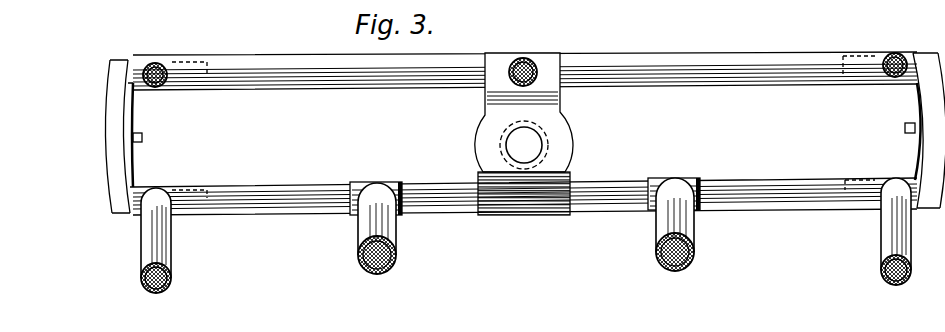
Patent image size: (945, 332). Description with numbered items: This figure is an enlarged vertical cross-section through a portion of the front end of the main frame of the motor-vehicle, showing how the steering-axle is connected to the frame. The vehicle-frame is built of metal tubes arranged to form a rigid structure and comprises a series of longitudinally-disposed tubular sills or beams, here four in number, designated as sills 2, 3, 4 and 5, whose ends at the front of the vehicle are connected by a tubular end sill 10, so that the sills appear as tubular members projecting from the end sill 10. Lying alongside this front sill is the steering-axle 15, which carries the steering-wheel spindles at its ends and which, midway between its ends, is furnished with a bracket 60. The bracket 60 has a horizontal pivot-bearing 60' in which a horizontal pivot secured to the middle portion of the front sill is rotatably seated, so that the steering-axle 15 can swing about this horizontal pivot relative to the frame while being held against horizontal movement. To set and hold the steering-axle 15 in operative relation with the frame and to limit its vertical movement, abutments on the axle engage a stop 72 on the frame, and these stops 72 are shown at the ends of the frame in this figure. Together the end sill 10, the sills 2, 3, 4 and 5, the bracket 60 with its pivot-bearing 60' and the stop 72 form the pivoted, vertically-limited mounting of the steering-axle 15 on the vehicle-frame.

The outer sill 2 is at (912, 260).
The sill 3 is at (695, 250).
The sill 4 is at (398, 257).
The outer sill 5 is at (172, 273).
The tubular end sill 10 is at (297, 192).
The steering-axle 15 is at (525, 109).
The bracket 60 is at (506, 134).
The horizontal pivot-bearing 60' is at (548, 133).
The stop 72 is at (142, 138).